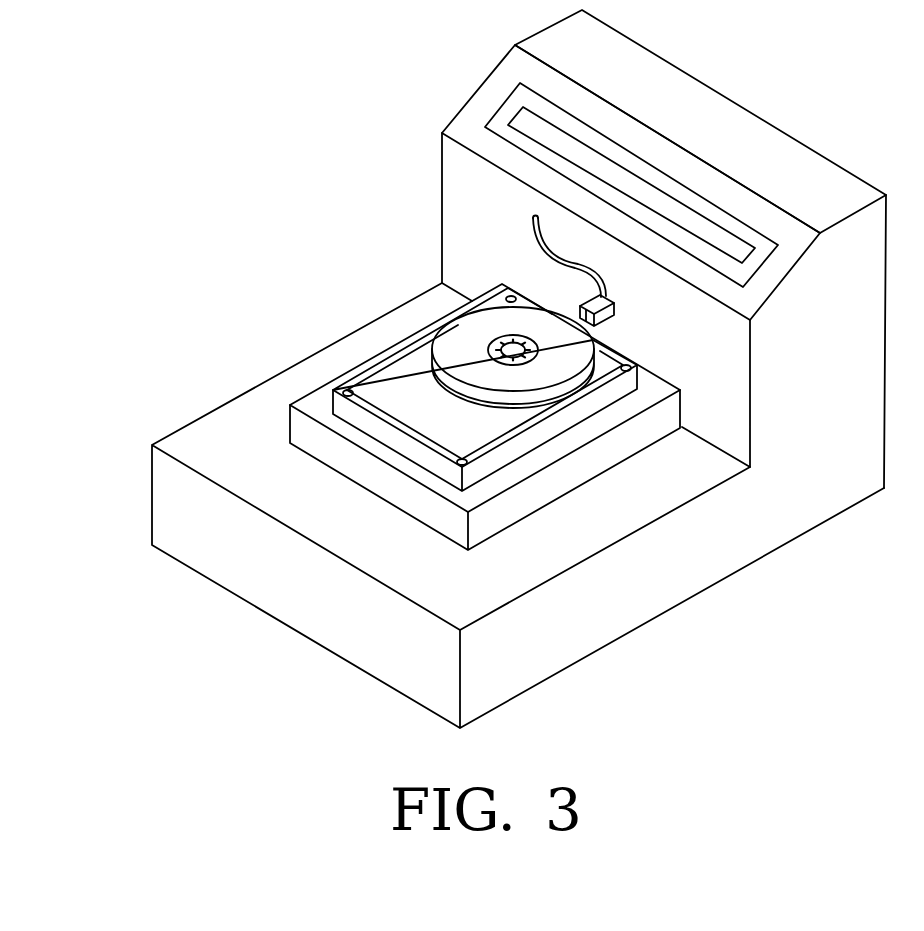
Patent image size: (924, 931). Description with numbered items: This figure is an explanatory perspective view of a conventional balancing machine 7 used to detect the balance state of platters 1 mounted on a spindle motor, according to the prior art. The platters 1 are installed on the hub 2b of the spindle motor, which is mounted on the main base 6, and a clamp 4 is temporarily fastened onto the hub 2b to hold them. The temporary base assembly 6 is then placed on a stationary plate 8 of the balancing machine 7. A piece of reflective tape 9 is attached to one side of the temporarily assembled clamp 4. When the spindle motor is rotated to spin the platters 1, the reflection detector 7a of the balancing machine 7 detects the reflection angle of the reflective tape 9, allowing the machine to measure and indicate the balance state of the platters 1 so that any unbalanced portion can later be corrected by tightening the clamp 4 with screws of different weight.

The platters 1 is at (447, 360).
The hub 2b is at (492, 361).
The clamp 4 is at (497, 344).
The main base 6 is at (400, 483).
The balancing machine 7 is at (745, 530).
The reflection detector 7a is at (614, 311).
The stationary plate 8 is at (583, 457).
The reflective tape 9 is at (530, 335).